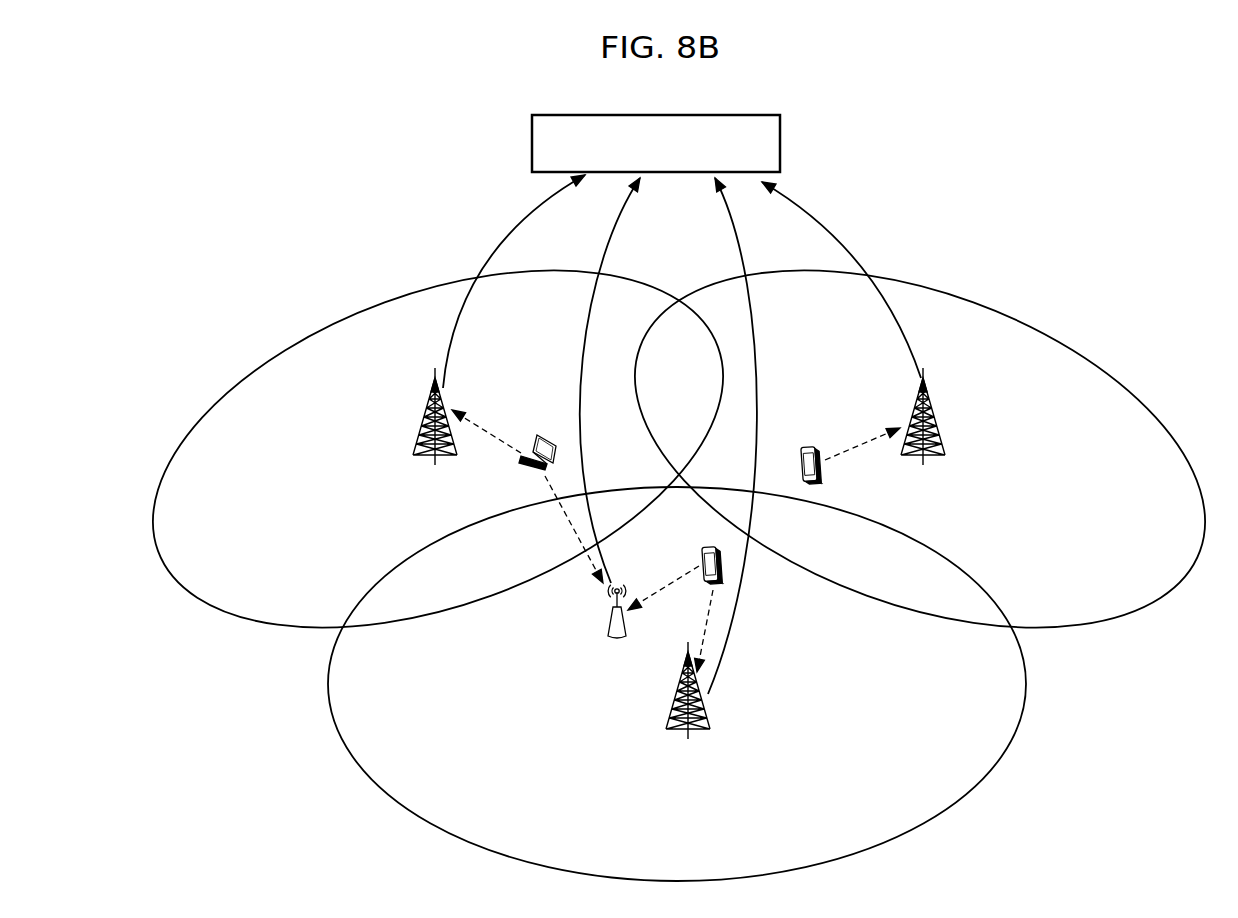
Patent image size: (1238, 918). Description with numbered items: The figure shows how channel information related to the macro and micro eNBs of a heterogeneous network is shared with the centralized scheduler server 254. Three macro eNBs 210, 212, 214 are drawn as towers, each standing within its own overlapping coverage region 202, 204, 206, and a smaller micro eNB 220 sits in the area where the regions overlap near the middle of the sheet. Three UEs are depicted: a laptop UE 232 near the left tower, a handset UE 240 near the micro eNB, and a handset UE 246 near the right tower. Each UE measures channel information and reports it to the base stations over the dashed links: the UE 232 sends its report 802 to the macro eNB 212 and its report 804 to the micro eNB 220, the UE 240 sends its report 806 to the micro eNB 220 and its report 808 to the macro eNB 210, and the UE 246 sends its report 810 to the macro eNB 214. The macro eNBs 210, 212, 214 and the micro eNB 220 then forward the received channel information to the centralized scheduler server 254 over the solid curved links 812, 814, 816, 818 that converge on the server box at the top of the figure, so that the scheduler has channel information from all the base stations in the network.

The centralized scheduler server 254 is at (781, 140).
The coverage area of base station 210 202 is at (960, 803).
The coverage area of base station 212 204 is at (287, 350).
The coverage area of base station 214 206 is at (1043, 329).
The macro eNB 210 is at (698, 730).
The macro eNB 212 is at (428, 393).
The macro eNB 214 is at (933, 408).
The micro eNB 220 is at (615, 642).
The UE 232 is at (527, 466).
The UE 240 is at (705, 545).
The UE 246 is at (822, 475).
The channel information report 802 is at (496, 432).
The channel information report 804 is at (568, 515).
The channel information report 806 is at (667, 587).
The channel information report 808 is at (708, 626).
The channel information report 810 is at (862, 442).
The channel information sharing 812 is at (528, 225).
The channel information sharing 814 is at (611, 238).
The channel information sharing 816 is at (741, 239).
The channel information sharing 818 is at (818, 214).